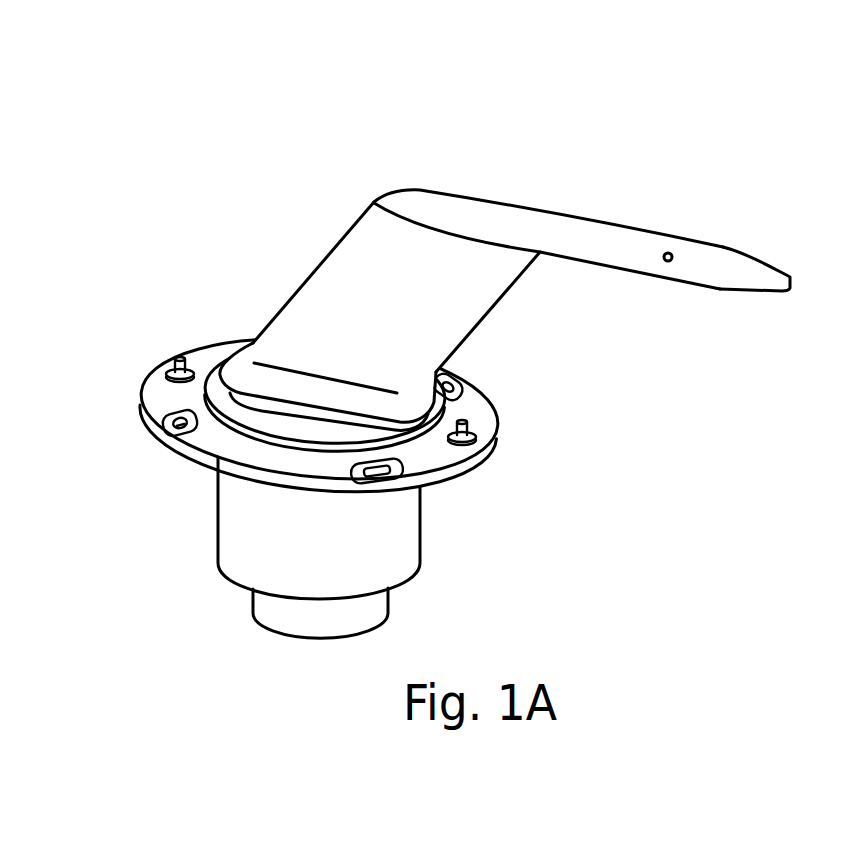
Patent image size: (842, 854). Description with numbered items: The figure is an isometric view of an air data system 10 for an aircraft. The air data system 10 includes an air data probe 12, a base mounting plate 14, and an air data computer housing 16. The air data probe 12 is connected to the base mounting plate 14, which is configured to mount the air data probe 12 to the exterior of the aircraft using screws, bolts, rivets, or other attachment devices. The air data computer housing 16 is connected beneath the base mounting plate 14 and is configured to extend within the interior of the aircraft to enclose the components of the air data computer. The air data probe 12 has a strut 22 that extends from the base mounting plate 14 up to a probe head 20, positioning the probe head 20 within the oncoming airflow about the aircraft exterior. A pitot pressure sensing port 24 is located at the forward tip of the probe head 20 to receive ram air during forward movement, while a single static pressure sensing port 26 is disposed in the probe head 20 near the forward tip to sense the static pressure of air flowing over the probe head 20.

The air data system 10 is at (678, 104).
The air data probe 12 is at (338, 164).
The base mounting plate 14 is at (156, 384).
The air data computer housing 16 is at (416, 528).
The probe head 20 is at (631, 222).
The strut 22 is at (276, 292).
The pitot pressure sensing port 24 is at (795, 284).
The static pressure sensing port 26 is at (665, 281).